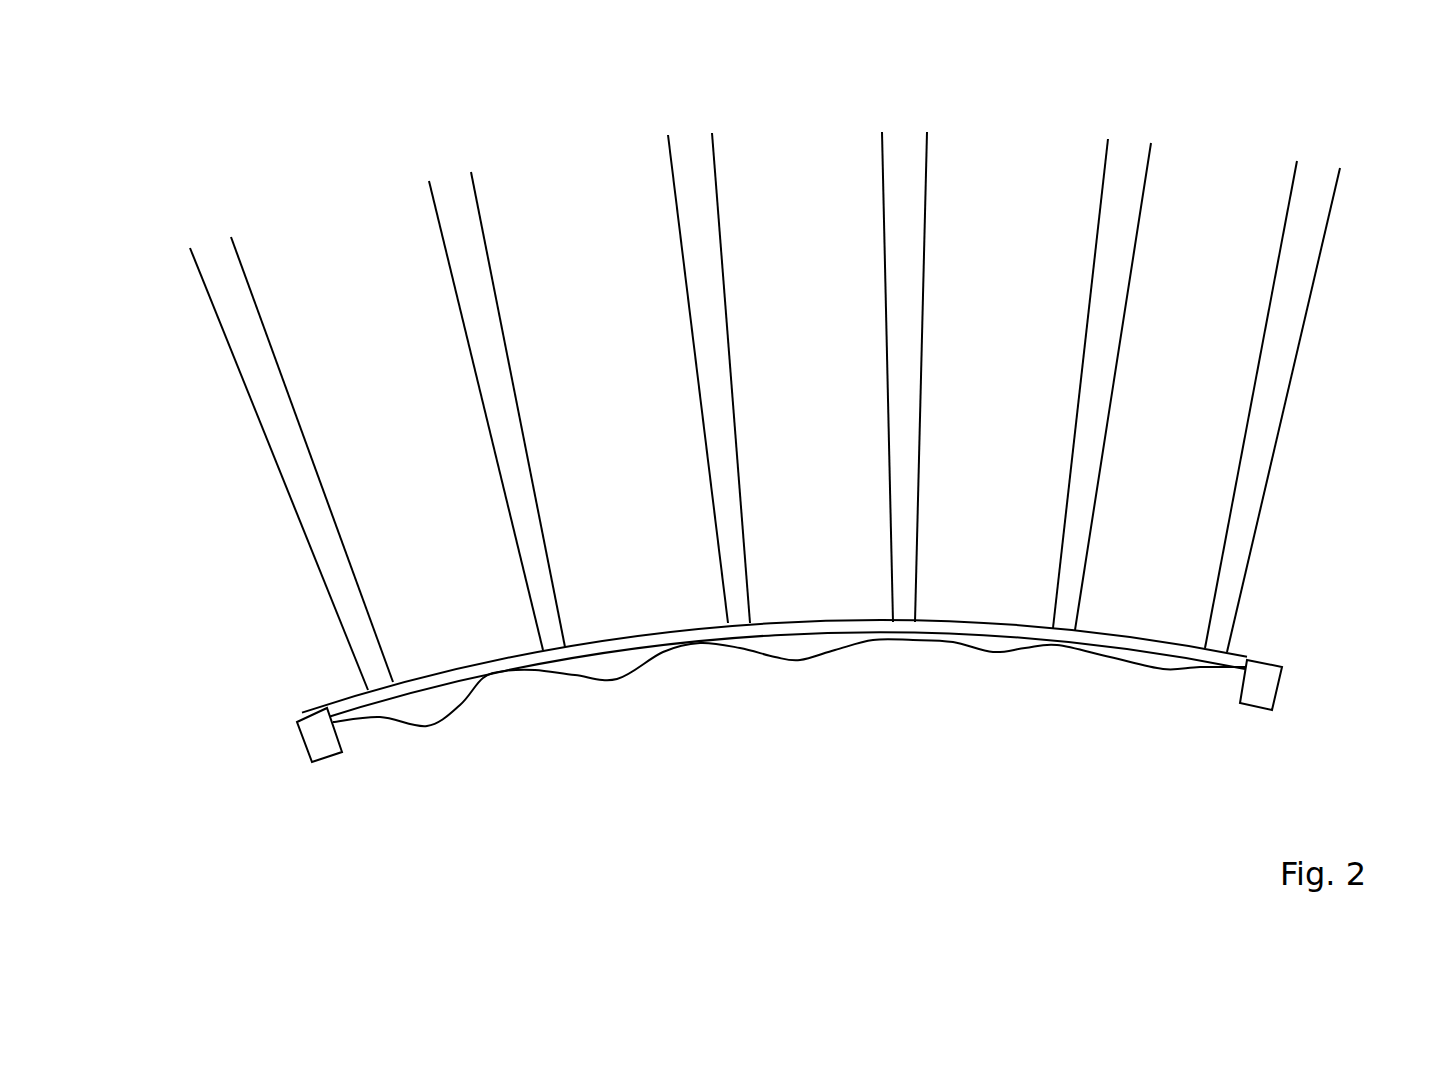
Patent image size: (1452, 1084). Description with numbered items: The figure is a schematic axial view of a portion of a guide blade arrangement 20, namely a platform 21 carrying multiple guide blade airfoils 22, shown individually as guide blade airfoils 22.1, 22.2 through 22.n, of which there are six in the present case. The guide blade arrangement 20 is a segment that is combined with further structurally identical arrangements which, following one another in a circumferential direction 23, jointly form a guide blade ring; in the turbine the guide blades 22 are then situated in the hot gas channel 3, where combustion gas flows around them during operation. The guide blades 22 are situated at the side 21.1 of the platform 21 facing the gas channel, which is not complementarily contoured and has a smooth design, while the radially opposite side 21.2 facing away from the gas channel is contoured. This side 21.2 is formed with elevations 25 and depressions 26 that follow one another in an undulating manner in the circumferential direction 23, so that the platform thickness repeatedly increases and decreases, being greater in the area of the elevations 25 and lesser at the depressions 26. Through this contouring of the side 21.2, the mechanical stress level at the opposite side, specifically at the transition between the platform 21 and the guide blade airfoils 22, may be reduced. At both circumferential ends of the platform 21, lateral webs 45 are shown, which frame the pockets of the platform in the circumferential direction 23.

The guide blade arrangement 20 is at (200, 172).
The guide blade airfoils 22 is at (213, 400).
The guide blade airfoil 22.1 is at (290, 434).
The guide blade airfoil 22.2 is at (497, 378).
The guide blade airfoil 22.n is at (1292, 328).
The circumferential direction 23 is at (242, 517).
The hot gas channel 3 is at (419, 495).
The platform 21 is at (287, 787).
The side of platform facing the gas channel 21.1 is at (330, 672).
The side of platform facing away from the gas channel 21.2 is at (388, 732).
The lateral webs 45 is at (318, 728).
The elevations 25 is at (620, 690).
The depressions 26 is at (728, 663).